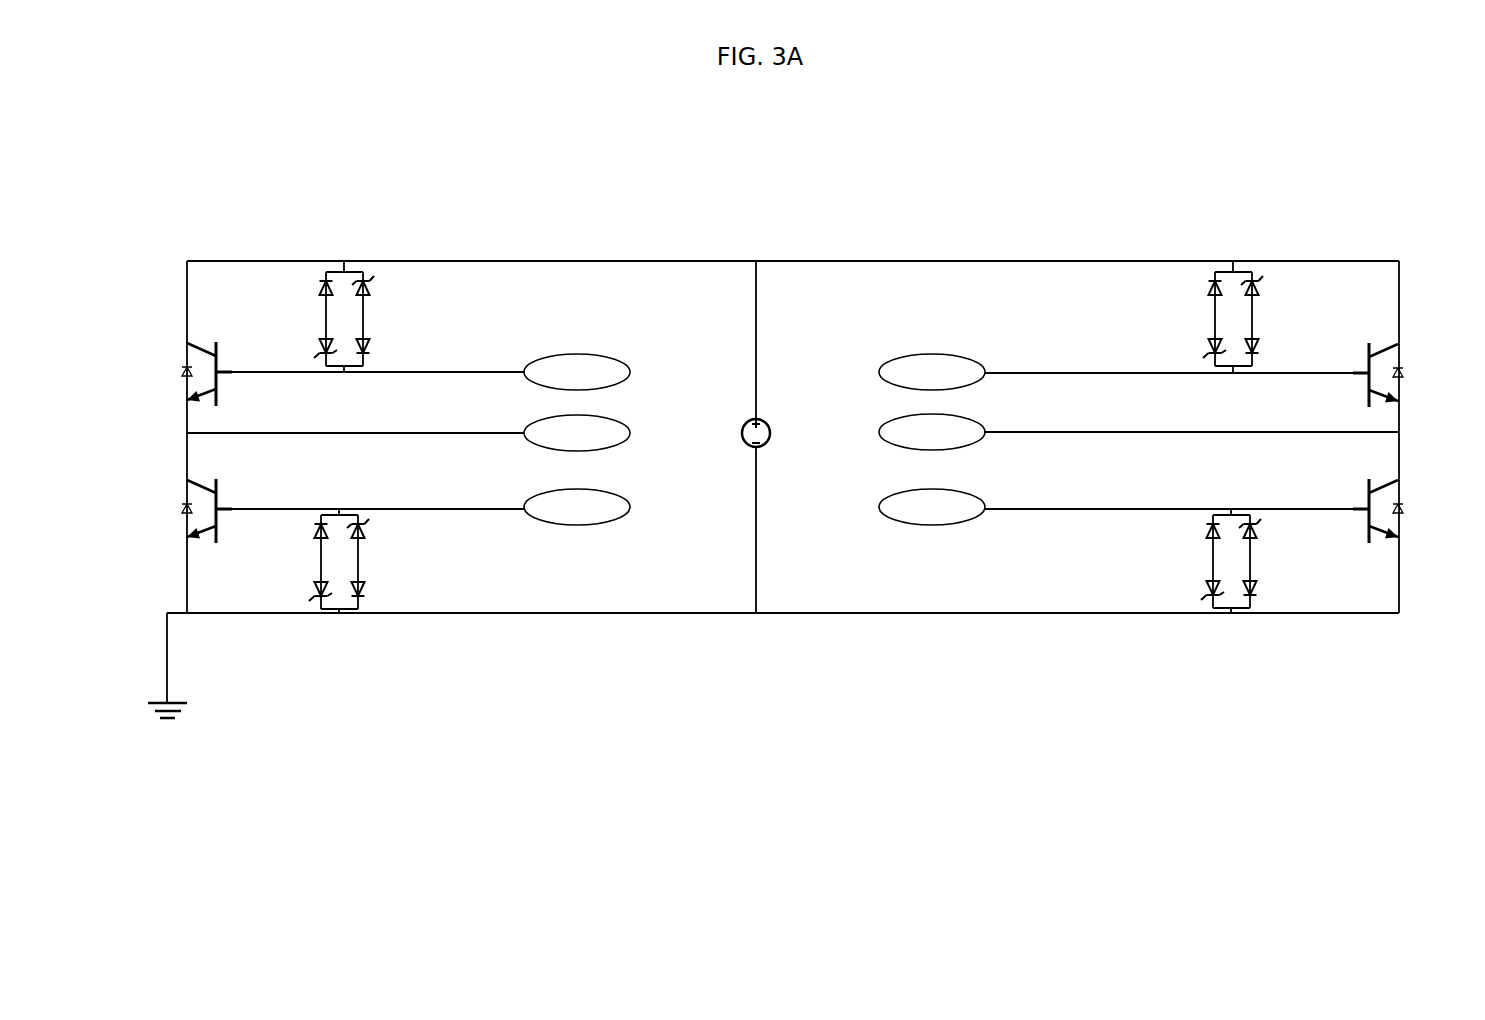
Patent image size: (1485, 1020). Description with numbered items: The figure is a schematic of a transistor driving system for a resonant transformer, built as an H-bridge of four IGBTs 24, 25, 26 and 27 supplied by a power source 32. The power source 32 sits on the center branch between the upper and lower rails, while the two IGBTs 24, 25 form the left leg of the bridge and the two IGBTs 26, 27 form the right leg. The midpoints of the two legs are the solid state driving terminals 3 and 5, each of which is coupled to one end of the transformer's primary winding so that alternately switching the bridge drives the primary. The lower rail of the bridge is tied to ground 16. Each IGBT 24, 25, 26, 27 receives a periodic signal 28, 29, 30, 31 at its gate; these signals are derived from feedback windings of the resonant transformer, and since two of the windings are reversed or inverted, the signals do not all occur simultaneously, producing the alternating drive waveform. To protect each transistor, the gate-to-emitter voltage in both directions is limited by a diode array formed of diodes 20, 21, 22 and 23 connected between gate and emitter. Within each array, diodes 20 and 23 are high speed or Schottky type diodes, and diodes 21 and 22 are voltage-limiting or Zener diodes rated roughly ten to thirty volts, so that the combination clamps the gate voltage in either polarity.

The solid state driving terminal 3 is at (577, 433).
The solid state driving terminal 5 is at (932, 432).
The ground 16 is at (186, 665).
The diode 20 is at (742, 414).
The diode 21 is at (829, 413).
The diode 22 is at (744, 470).
The diode 23 is at (832, 470).
The IGBT 24 is at (180, 374).
The IGBT 25 is at (178, 511).
The IGBT 26 is at (1406, 375).
The IGBT 27 is at (1406, 511).
The periodic signal 28 is at (577, 372).
The periodic signal 29 is at (577, 507).
The periodic signal 30 is at (932, 372).
The periodic signal 31 is at (932, 507).
The power source 32 is at (773, 420).